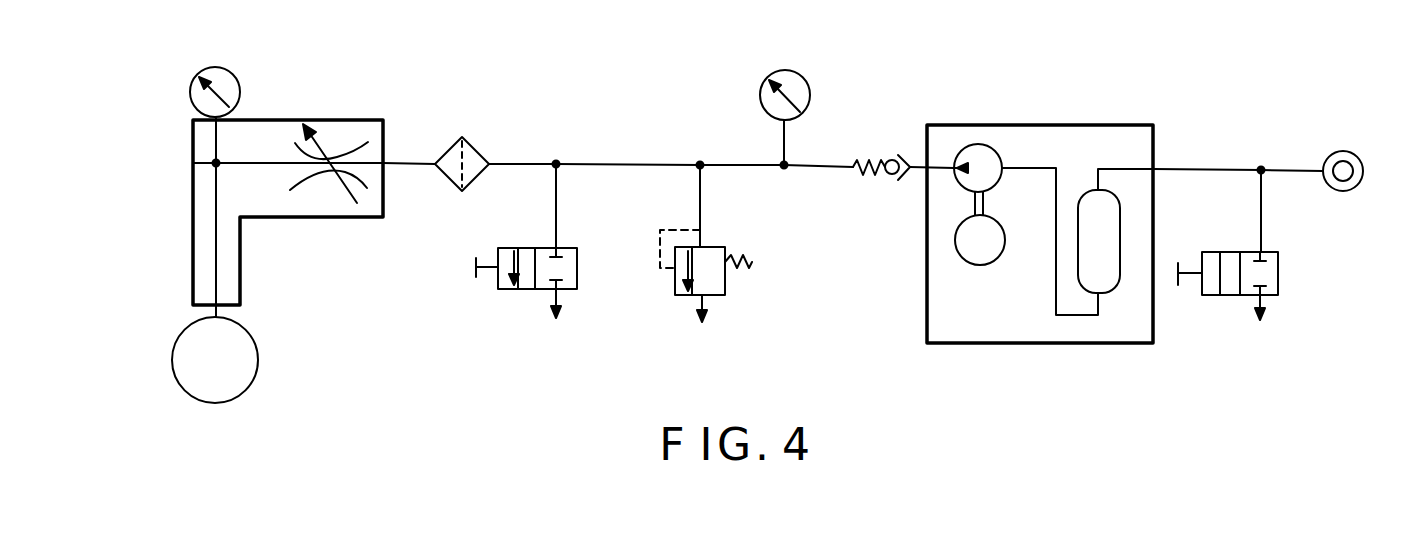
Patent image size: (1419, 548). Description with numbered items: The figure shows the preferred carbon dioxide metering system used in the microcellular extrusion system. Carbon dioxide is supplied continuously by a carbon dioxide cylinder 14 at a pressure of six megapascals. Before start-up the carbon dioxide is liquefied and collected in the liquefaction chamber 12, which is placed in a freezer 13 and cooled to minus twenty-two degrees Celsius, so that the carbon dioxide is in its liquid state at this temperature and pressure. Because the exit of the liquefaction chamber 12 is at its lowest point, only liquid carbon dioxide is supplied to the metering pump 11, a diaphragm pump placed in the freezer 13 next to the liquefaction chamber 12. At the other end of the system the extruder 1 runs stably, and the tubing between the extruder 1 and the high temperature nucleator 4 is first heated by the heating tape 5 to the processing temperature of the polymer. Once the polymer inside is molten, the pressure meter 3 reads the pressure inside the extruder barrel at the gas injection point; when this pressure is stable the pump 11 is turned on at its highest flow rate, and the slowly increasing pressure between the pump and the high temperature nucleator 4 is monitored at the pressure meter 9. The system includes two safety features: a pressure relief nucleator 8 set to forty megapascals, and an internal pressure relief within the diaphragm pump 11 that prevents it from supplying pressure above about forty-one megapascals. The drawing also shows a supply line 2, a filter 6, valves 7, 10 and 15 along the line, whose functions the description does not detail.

The extruder 1 is at (181, 331).
The supply line 2 is at (193, 163).
The pressure meter 3 is at (232, 77).
The high temperature nucleator 4 is at (340, 153).
The heating tape 5 is at (384, 120).
The filter 6 is at (472, 145).
The manually operated valve 7 is at (508, 248).
The pressure relief nucleator 8 is at (712, 258).
The pressure meter 9 is at (758, 98).
The check valve 10 is at (888, 152).
The metering pump 11 is at (977, 155).
The liquefaction chamber 12 is at (1110, 218).
The freezer 13 is at (1110, 157).
The carbon dioxide cylinder 14 is at (1326, 164).
The manually operated valve 15 is at (1278, 252).